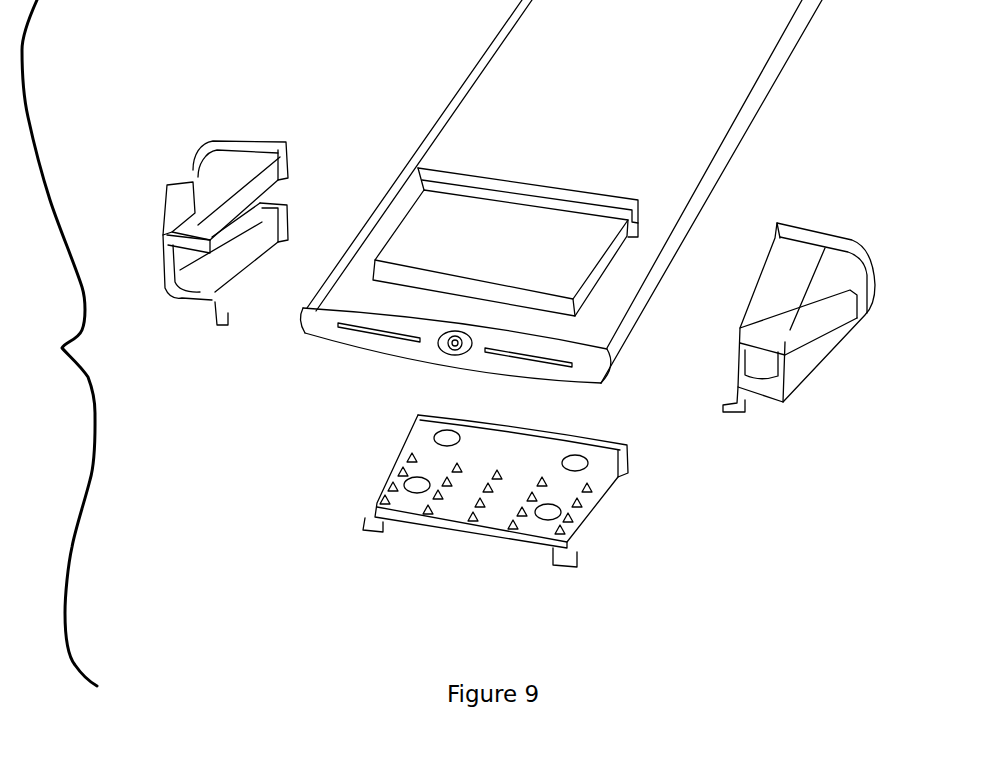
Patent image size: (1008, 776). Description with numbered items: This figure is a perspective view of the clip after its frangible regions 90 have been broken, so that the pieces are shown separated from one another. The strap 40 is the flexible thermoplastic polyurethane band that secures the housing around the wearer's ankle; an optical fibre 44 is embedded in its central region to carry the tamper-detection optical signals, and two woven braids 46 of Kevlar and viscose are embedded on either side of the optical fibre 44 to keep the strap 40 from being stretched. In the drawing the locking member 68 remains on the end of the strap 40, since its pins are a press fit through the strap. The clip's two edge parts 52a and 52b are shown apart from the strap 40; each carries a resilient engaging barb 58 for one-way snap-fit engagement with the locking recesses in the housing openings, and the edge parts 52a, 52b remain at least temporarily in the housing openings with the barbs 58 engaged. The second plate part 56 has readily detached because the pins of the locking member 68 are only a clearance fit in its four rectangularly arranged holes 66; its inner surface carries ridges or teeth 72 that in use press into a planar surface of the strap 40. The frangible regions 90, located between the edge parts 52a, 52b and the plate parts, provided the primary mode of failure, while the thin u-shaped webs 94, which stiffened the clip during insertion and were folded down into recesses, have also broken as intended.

The strap 40 is at (716, 100).
The optical fibre 44 is at (447, 352).
The woven braids 46 is at (367, 330).
The edge part 52a is at (795, 268).
The edge part 52b is at (238, 182).
The second plate part 56 is at (495, 515).
The resilient engaging barb 58 is at (173, 208).
The holes 66 is at (440, 440).
The locking member 68 is at (418, 213).
The ridges or teeth 72 is at (482, 497).
The frangible regions 90 is at (300, 224).
The u-shaped webs 94 is at (218, 325).